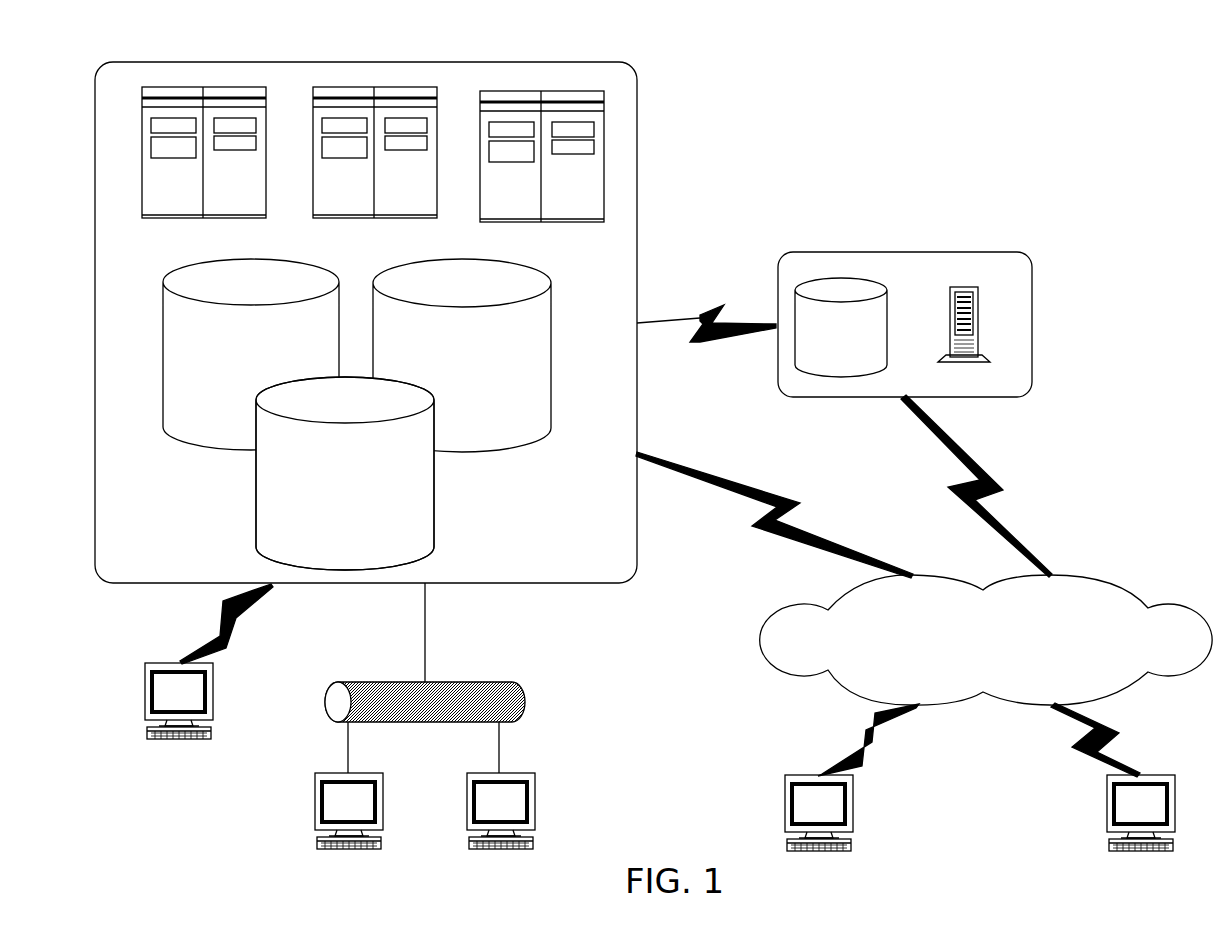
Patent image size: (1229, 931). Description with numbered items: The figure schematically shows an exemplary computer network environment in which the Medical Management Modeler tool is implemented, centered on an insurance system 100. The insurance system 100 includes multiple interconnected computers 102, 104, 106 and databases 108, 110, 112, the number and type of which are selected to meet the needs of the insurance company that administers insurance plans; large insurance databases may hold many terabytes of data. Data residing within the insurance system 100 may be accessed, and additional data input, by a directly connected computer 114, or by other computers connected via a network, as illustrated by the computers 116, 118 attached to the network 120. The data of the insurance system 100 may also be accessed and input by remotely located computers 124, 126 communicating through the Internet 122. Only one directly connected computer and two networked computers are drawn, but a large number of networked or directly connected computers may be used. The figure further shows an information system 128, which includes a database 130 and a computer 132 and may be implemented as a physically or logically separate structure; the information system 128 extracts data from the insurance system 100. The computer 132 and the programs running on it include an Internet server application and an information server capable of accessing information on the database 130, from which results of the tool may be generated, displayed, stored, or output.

The insurance system 100 is at (535, 62).
The computer 102 is at (157, 220).
The computer 104 is at (320, 220).
The computer 106 is at (526, 223).
The database 108 is at (163, 374).
The database 110 is at (256, 494).
The database 112 is at (552, 378).
The computer 114 is at (145, 694).
The computer 116 is at (315, 805).
The computer 118 is at (467, 805).
The network 120 is at (400, 682).
The Internet 122 is at (1075, 575).
The computer 124 is at (853, 790).
The computer 126 is at (1107, 792).
The information system 128 is at (930, 252).
The database 130 is at (889, 315).
The computer 132 is at (980, 315).